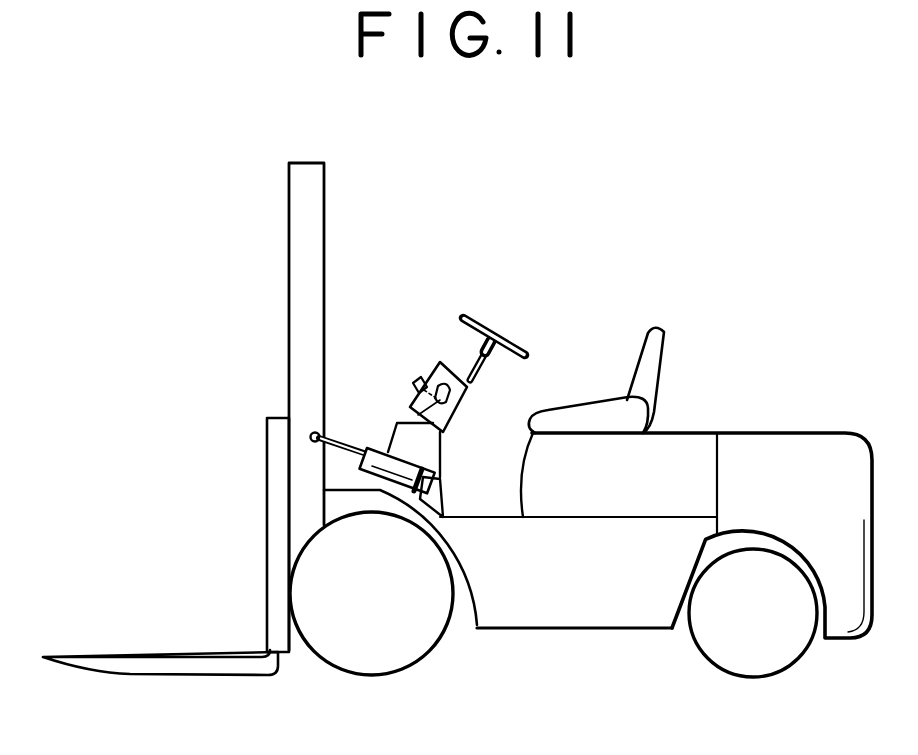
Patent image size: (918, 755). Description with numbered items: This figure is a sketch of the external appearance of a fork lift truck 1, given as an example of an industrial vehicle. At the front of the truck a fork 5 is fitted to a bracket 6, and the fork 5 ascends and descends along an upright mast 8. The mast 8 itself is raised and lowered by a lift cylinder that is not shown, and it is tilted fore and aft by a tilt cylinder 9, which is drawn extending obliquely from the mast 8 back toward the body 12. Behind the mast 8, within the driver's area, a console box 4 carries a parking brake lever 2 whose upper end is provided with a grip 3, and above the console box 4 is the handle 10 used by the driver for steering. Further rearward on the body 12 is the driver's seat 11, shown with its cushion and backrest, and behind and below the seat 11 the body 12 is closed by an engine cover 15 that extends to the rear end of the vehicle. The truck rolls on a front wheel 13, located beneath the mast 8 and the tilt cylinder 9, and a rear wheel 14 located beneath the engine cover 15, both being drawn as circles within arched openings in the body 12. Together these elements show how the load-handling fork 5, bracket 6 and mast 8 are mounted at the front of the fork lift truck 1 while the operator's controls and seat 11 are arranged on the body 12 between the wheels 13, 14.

The fork lift truck 1 is at (248, 300).
The parking brake lever 2 is at (430, 372).
The grip 3 is at (458, 397).
The console box 4 is at (438, 362).
The fork 5 is at (128, 657).
The bracket 6 is at (276, 472).
The mast 8 is at (290, 195).
The tilt cylinder 9 is at (376, 450).
The handle 10 is at (490, 333).
The driver's seat 11 is at (600, 398).
The body 12 is at (566, 618).
The front wheel 13 is at (357, 655).
The rear wheel 14 is at (740, 650).
The engine cover 15 is at (678, 443).